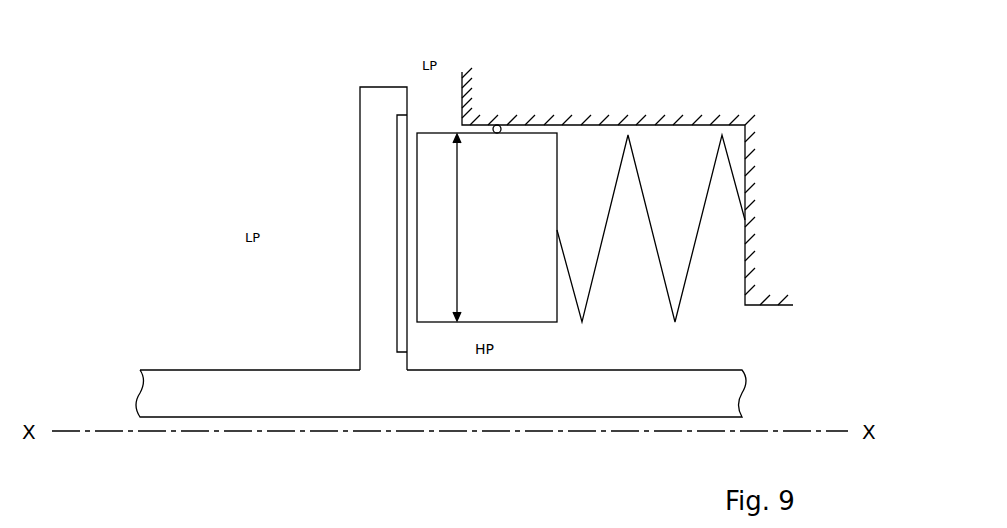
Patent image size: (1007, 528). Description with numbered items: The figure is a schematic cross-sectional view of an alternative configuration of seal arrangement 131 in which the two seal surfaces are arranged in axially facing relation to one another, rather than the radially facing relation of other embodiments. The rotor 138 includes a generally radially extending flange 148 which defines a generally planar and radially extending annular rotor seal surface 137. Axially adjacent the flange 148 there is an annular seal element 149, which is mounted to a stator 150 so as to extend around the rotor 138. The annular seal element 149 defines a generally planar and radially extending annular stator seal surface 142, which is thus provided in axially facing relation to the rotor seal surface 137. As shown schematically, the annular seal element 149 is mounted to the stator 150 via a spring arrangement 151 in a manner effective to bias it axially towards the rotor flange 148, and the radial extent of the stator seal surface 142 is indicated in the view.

The seal arrangement 131 is at (265, 63).
The rotor seal surface 137 is at (407, 123).
The rotor 138 is at (188, 395).
The stator seal surface 142 is at (415, 222).
The flange 148 is at (402, 185).
The annular seal element 149 is at (530, 160).
The stator 150 is at (712, 120).
The spring arrangement 151 is at (695, 243).